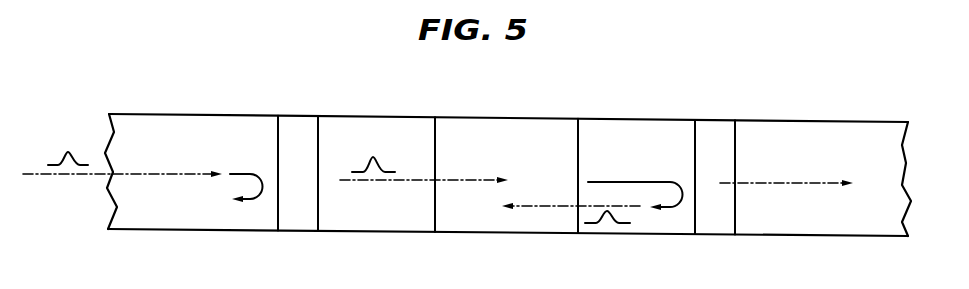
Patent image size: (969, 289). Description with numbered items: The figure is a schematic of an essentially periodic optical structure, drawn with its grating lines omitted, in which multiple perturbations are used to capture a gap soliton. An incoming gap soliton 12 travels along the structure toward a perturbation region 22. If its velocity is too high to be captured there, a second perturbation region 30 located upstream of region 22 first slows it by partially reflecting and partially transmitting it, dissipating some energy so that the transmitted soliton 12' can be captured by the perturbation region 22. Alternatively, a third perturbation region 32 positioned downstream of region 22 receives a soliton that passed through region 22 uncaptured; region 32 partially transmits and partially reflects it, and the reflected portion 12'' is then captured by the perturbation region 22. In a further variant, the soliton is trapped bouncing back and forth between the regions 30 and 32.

The gap soliton 12 is at (68, 137).
The transmitted soliton 12' is at (373, 126).
The reflected portion of the soliton 12'' is at (607, 241).
The second perturbation region 30 is at (296, 122).
The perturbation region 22 is at (502, 126).
The third perturbation region 32 is at (714, 128).